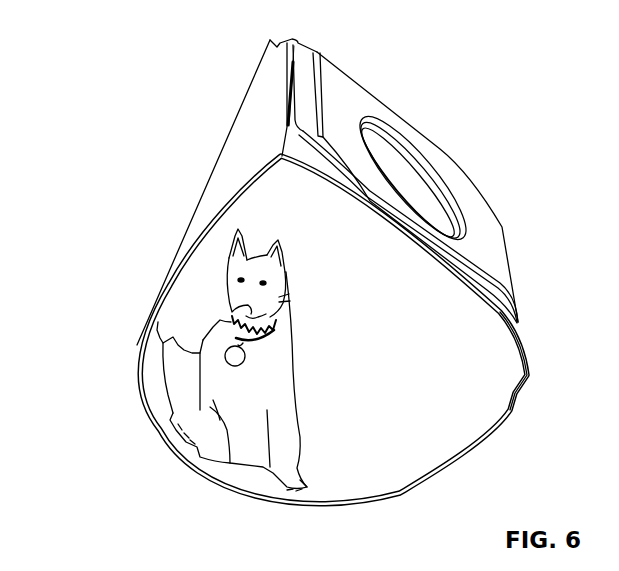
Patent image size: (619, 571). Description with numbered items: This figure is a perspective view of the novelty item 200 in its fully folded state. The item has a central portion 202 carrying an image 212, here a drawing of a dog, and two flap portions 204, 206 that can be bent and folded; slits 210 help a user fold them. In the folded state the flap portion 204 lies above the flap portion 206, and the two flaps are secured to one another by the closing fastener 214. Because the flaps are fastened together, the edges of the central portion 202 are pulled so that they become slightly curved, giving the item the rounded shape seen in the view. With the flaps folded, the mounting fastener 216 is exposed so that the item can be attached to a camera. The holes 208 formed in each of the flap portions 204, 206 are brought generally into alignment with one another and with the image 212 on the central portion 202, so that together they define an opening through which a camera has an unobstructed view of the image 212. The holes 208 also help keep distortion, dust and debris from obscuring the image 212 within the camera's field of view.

The novelty item 200 is at (96, 46).
The central portion 202 is at (340, 467).
The flap portion 204 is at (307, 150).
The flap portion 206 is at (515, 347).
The holes 208 is at (408, 175).
The slits 210 is at (289, 93).
The image 212 is at (230, 430).
The closing fastener 214 is at (500, 303).
The mounting fastener 216 is at (487, 243).